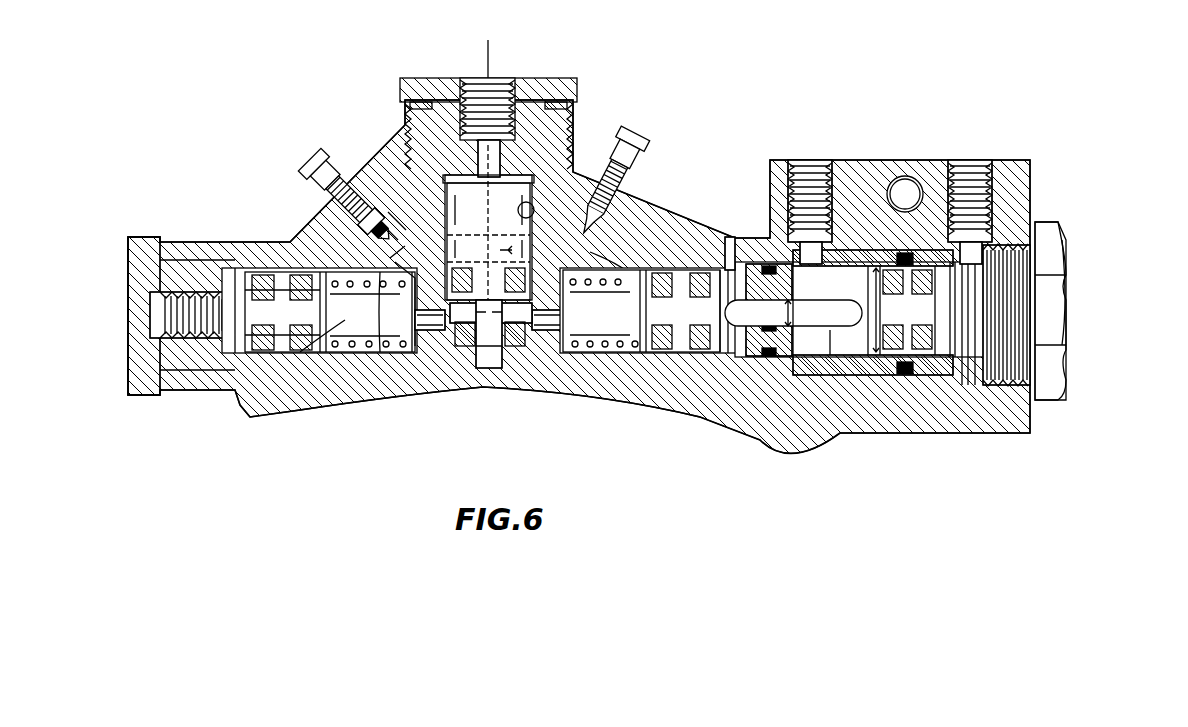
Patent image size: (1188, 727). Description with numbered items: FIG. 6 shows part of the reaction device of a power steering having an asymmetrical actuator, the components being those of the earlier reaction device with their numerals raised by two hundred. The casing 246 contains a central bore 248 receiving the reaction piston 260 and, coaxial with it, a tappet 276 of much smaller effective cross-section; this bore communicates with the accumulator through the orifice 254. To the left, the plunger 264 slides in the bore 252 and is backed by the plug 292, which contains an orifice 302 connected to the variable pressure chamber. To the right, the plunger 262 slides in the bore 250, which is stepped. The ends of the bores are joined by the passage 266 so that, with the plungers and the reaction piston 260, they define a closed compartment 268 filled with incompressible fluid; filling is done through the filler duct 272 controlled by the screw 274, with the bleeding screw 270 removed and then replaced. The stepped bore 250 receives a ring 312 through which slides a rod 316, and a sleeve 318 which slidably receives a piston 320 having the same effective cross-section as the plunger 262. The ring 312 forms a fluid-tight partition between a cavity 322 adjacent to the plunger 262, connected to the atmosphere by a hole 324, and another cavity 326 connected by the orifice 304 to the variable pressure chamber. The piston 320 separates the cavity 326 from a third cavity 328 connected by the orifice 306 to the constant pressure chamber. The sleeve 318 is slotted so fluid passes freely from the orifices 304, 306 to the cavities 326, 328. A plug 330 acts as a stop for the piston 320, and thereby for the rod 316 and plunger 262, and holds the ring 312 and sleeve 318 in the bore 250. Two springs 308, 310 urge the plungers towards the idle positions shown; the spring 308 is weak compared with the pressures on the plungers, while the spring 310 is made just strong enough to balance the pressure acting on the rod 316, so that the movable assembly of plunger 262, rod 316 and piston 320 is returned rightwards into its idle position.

The casing 246 is at (210, 250).
The bore 248 is at (535, 205).
The bore 250 is at (630, 272).
The bore 252 is at (396, 352).
The orifice 254 is at (482, 92).
The reaction piston 260 is at (396, 258).
The plunger 262 is at (685, 310).
The plunger 264 is at (268, 320).
The passage 266 is at (565, 300).
The closed compartment 268 is at (355, 330).
The bleeding screw 270 is at (640, 213).
The filler duct 272 is at (393, 222).
The screw 274 is at (315, 180).
The tappet 276 is at (492, 356).
The plug 292 is at (142, 385).
The orifice 302 is at (130, 315).
The orifice 304 is at (815, 180).
The orifice 306 is at (970, 180).
The spring 308 is at (420, 378).
The spring 310 is at (615, 348).
The ring 312 is at (810, 266).
The rod 316 is at (845, 290).
The sleeve 318 is at (867, 370).
The piston 320 is at (920, 347).
The cavity 322 is at (745, 345).
The hole 324 is at (732, 258).
The cavity 326 is at (823, 340).
The cavity 328 is at (978, 372).
The plug 330 is at (1070, 382).